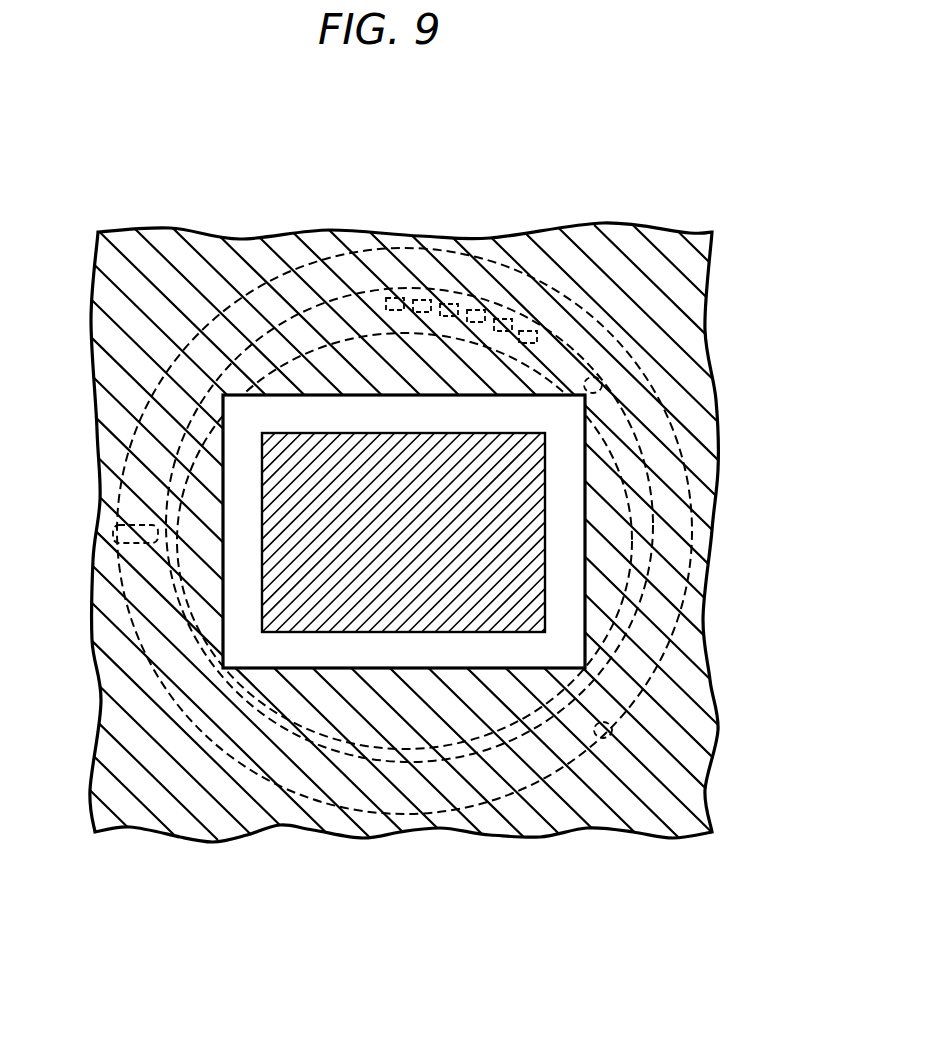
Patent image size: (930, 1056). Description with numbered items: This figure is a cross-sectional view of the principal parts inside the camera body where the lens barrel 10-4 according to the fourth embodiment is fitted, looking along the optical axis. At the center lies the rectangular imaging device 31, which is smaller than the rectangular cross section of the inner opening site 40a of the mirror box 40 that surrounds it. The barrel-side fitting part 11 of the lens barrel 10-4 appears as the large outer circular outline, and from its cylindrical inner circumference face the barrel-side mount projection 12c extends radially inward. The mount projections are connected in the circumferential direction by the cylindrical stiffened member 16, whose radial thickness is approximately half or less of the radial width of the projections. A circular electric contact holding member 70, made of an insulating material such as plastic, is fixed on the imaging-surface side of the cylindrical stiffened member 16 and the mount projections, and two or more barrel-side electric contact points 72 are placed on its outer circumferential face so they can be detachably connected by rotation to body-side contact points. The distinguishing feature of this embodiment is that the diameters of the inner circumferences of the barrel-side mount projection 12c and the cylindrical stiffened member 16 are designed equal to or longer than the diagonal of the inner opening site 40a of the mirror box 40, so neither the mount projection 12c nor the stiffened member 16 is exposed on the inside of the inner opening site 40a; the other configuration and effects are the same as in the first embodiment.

The mirror box 40 is at (203, 282).
The inner opening site 40a is at (482, 676).
The imaging device 31 is at (512, 500).
The barrel-side fitting part 11 is at (700, 300).
The barrel-side mount projection 12c is at (302, 312).
The electric contact holding member 70 is at (549, 338).
The barrel-side electric contact points 72 is at (487, 308).
The cylindrical stiffened member 16 is at (600, 383).
The lens barrel 10-4 is at (578, 760).